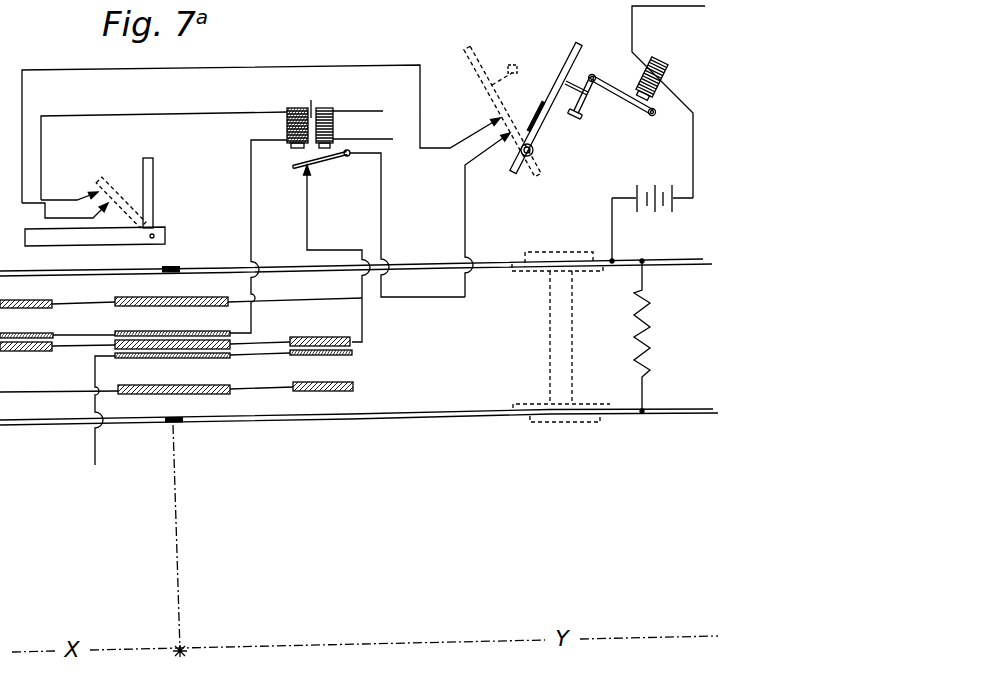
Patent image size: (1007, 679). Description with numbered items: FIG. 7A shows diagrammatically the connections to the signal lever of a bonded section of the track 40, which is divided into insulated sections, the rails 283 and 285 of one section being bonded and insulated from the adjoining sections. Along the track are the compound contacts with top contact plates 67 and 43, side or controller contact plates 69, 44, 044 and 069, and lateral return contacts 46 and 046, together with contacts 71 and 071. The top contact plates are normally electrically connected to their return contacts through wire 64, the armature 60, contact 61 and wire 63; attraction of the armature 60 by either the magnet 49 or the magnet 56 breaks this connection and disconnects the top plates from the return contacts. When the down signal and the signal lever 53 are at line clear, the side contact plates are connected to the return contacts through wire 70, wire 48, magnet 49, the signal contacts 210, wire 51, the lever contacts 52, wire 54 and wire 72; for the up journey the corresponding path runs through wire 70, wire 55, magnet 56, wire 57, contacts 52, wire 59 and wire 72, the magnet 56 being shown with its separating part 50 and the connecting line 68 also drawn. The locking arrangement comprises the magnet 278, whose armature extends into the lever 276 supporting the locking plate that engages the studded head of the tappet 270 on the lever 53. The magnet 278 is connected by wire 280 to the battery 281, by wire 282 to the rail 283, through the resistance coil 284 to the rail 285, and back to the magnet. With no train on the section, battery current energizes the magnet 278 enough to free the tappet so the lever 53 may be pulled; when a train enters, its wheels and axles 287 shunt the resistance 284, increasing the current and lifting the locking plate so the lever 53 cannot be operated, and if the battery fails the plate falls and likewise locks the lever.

The track 40 is at (95, 212).
The top contact plate 43 is at (114, 345).
The side or controller contact plate 44 is at (195, 331).
The lateral return contact 46 is at (171, 292).
The wire 48 is at (253, 217).
The magnet 49 is at (287, 128).
The armature 50 is at (313, 100).
The wire 51 is at (122, 70).
The contacts 52 is at (503, 129).
The signal lever 53 is at (573, 63).
The wire 54 is at (465, 215).
The wire 55 is at (390, 139).
The magnet 56 is at (333, 126).
The wire 57 is at (383, 110).
The wire 59 is at (65, 392).
The armature 60 is at (326, 160).
The contact 61 is at (302, 172).
The wire 63 is at (309, 205).
The wire 64 is at (380, 225).
The top contact plate 67 is at (33, 352).
The conductor 68 is at (66, 350).
The side or controller contact plate 69 is at (45, 333).
The wire 70 is at (100, 334).
The contact strip 71 is at (26, 294).
The wire 72 is at (275, 390).
The contacts 210 is at (104, 188).
The tappet 270 is at (576, 83).
The lever 276 is at (613, 94).
The magnet 278 is at (661, 70).
The wire 280 is at (693, 136).
The battery 281 is at (651, 185).
The wire 282 is at (612, 214).
The rail 283 is at (672, 264).
The resistance coil 284 is at (651, 342).
The rail 285 is at (681, 410).
The wheels and axles 287 is at (556, 332).
The side or controller contact plate 044 is at (198, 358).
The lateral return contact 046 is at (198, 394).
The side or controller contact plate 069 is at (321, 363).
The contact strip 071 is at (340, 391).